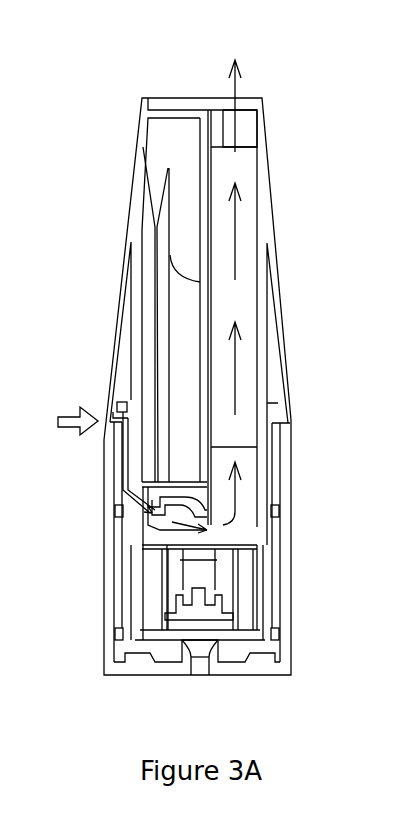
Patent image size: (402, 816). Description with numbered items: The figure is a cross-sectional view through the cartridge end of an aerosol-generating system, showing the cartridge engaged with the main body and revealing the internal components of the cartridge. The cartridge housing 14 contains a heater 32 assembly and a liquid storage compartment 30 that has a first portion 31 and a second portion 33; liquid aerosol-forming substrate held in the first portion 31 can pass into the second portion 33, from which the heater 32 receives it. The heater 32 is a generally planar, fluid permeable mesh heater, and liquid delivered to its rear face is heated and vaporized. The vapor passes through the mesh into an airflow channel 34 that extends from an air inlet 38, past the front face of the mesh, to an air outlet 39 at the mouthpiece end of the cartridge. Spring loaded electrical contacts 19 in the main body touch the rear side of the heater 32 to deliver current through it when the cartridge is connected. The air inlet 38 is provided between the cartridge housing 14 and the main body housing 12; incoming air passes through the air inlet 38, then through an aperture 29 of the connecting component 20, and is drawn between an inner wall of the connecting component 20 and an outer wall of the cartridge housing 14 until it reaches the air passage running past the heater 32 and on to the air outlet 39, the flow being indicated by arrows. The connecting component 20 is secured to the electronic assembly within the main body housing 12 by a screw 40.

The main body housing 12 is at (295, 567).
The cartridge housing 14 is at (277, 202).
The spring loaded electrical contacts 19 is at (152, 563).
The connecting component 20 is at (277, 617).
The aperture 29 is at (115, 413).
The liquid storage compartment 30 is at (185, 403).
The first portion 31 is at (185, 365).
The heater 32 is at (185, 568).
The second portion 33 is at (187, 582).
The airflow channel 34 is at (243, 358).
The air inlet 38 is at (107, 423).
The air outlet 39 is at (243, 115).
The screw 40 is at (203, 672).